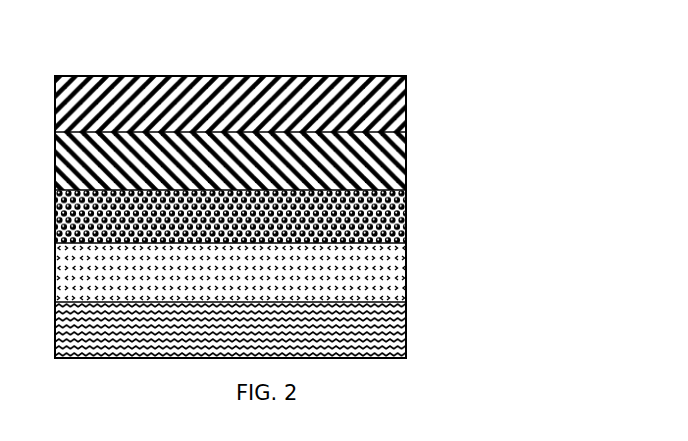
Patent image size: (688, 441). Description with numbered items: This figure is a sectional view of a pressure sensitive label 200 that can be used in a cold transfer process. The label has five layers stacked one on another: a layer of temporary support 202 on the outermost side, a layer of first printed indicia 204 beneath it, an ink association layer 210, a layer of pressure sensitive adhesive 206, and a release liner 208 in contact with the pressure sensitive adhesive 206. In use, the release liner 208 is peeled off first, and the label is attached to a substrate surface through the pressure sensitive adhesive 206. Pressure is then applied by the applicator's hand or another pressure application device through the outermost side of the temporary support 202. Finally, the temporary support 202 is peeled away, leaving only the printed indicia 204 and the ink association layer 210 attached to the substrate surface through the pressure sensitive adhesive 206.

The pressure sensitive label 200 is at (416, 67).
The temporary support 202 is at (385, 104).
The first printed indicia 204 is at (385, 160).
The ink association layer 210 is at (385, 216).
The pressure sensitive adhesive 206 is at (385, 275).
The release liner 208 is at (385, 332).